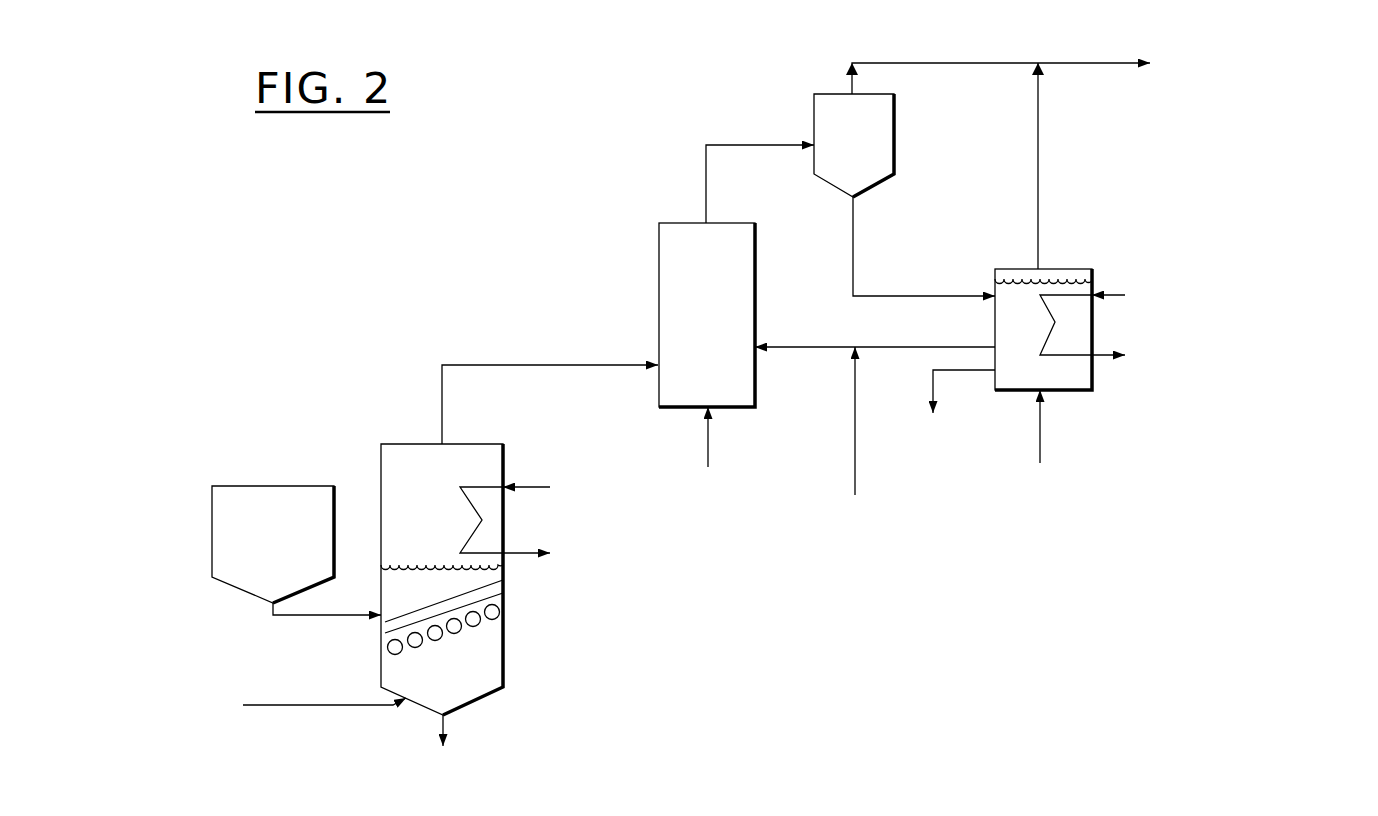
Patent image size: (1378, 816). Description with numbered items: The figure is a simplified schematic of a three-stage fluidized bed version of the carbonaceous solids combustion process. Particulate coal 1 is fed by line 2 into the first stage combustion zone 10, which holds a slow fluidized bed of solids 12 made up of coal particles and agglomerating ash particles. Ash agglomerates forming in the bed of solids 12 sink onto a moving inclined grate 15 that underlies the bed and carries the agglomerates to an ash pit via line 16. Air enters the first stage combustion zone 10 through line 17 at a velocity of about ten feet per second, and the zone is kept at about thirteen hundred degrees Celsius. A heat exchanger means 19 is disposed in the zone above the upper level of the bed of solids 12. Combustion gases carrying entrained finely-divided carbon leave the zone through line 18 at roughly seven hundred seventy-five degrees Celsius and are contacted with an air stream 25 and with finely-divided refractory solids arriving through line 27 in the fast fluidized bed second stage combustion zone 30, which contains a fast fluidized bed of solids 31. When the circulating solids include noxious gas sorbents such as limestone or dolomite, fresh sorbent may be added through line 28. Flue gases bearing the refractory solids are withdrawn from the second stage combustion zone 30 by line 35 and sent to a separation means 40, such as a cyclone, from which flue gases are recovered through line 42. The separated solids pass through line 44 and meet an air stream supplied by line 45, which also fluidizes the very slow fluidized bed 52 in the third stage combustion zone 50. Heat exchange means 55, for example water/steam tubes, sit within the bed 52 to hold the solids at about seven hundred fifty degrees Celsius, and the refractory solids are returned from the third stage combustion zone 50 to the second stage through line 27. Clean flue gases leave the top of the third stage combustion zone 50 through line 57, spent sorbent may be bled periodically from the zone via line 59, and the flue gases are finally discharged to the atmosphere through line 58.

The particulate coal 1 is at (219, 525).
The line 2 is at (313, 618).
The first stage combustion zone 10 is at (381, 472).
The slow fluidized bed of solids 12 is at (418, 566).
The moving inclined grate 15 is at (508, 607).
The line 16 is at (447, 725).
The line 17 is at (333, 708).
The line 18 is at (551, 362).
The heat exchanger means 19 is at (490, 487).
The air stream 25 is at (708, 440).
The line 27 is at (793, 347).
The line 28 is at (855, 418).
The second stage combustion zone 30 is at (755, 270).
The fast fluidized bed of solids 31 is at (669, 303).
The line 35 is at (742, 145).
The separation means 40 is at (894, 133).
The line 42 is at (988, 62).
The line 44 is at (853, 249).
The line 45 is at (1040, 442).
The third stage combustion zone 50 is at (1053, 269).
The very slow fluidized bed 52 is at (1004, 320).
The heat exchange means 55 is at (1097, 357).
The line 57 is at (1038, 215).
The line 58 is at (1102, 62).
The line 59 is at (933, 387).